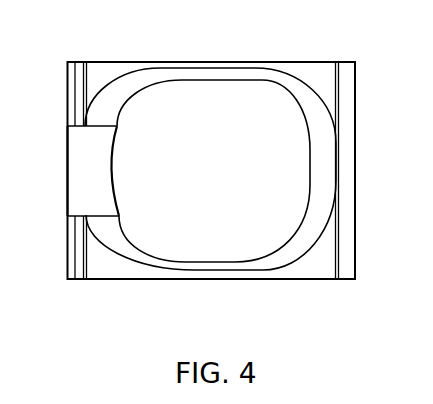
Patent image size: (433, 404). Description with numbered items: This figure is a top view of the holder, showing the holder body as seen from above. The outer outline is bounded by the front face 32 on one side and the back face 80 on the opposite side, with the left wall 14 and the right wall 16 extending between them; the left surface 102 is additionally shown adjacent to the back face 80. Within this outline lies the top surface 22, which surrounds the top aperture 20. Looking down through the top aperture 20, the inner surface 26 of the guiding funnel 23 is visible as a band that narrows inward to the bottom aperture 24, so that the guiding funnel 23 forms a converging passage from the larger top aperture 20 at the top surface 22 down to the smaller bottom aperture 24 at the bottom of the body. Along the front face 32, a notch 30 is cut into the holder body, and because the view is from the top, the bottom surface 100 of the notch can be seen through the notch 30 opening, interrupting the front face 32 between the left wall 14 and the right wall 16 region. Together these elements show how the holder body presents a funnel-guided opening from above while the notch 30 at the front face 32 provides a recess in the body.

The left wall 14 is at (213, 55).
The right wall 16 is at (213, 287).
The top aperture 20 is at (162, 72).
The top surface 22 is at (122, 73).
The guiding funnel 23 is at (225, 184).
The bottom aperture 24 is at (255, 82).
The inner surface 26 is at (320, 173).
The notch 30 is at (68, 169).
The front face 32 is at (68, 91).
The back face 80 is at (355, 109).
The bottom surface of the notch 100 is at (93, 193).
The left surface 102 is at (320, 62).